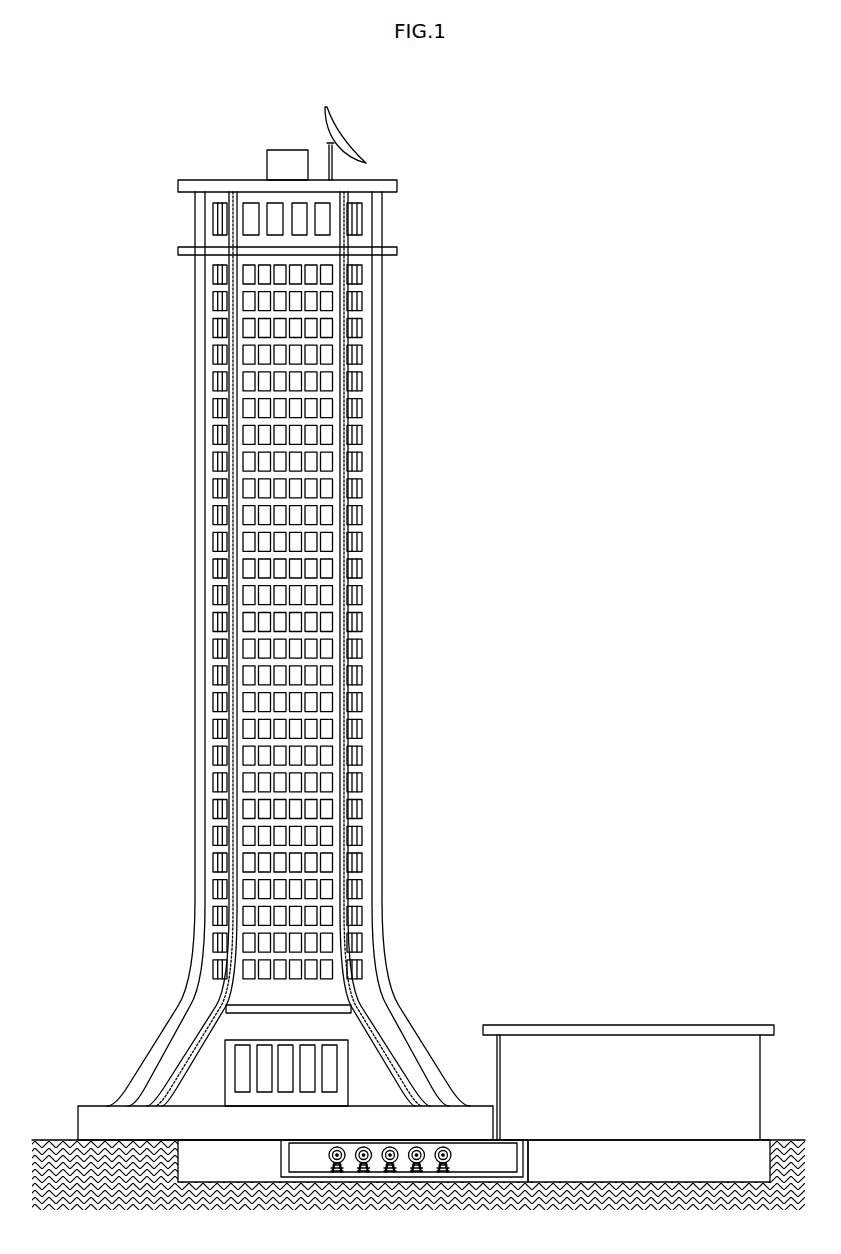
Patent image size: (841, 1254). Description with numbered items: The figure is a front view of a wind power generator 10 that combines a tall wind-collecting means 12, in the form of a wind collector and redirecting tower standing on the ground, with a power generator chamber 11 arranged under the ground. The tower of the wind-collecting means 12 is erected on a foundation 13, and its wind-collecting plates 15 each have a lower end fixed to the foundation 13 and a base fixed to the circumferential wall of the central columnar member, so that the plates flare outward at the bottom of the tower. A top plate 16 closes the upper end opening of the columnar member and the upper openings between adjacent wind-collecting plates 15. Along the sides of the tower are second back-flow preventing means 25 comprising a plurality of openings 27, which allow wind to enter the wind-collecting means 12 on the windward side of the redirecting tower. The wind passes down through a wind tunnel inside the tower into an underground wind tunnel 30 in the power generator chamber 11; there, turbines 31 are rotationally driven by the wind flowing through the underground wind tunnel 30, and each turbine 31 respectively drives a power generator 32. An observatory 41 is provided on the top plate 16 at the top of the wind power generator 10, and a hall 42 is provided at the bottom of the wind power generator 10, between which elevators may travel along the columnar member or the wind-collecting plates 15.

The wind power generator 10 is at (435, 83).
The power generator chamber 11 is at (461, 1137).
The wind-collecting means 12 is at (389, 474).
The foundation 13 is at (95, 1108).
The wind-collecting plates 15 is at (235, 650).
The top plate 16 is at (397, 250).
The second back-flow preventing means 25 is at (207, 992).
The openings 27 is at (325, 783).
The underground wind tunnel 30 is at (282, 1168).
The turbines 31 is at (330, 1170).
The power generators 32 is at (340, 1149).
The observatory 41 is at (260, 197).
The hall 42 is at (370, 1080).